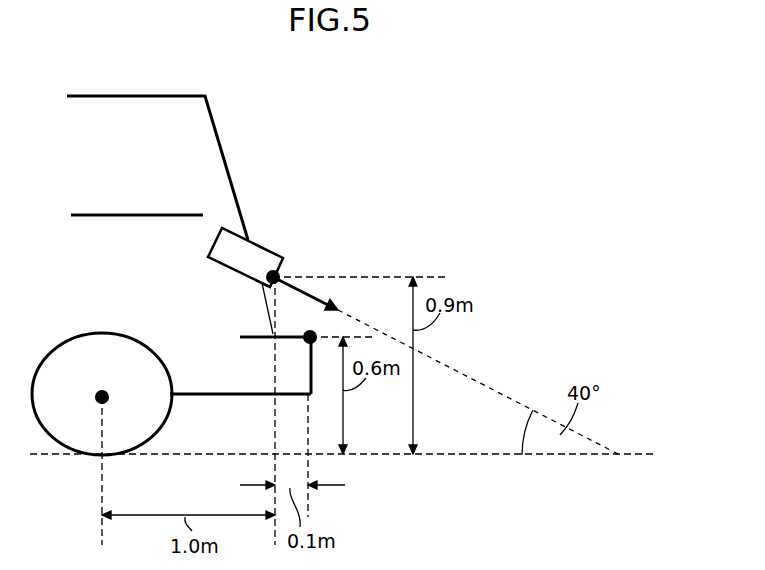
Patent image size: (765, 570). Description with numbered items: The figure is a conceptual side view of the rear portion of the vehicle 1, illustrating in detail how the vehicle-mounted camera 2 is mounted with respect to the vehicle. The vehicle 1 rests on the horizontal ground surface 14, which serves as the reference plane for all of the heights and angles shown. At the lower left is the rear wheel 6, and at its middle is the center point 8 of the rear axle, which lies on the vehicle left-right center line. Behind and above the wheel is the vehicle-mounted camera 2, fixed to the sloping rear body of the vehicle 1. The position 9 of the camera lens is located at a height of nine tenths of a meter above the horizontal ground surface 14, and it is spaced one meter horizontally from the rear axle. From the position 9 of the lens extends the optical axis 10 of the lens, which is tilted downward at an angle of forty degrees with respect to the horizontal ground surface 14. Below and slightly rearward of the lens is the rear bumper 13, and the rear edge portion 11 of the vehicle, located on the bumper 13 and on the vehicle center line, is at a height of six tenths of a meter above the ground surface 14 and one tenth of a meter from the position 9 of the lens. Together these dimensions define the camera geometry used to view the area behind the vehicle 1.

The vehicle 1 is at (135, 107).
The vehicle-mounted camera 2 is at (216, 248).
The rear wheel 6 is at (67, 355).
The center point of the rear axle 8 is at (95, 398).
The position of the lens 9 is at (283, 268).
The optical axis 10 is at (315, 289).
The rear edge portion of the vehicle 11 is at (307, 330).
The rear bumper 13 is at (292, 367).
The horizontal ground surface 14 is at (458, 457).